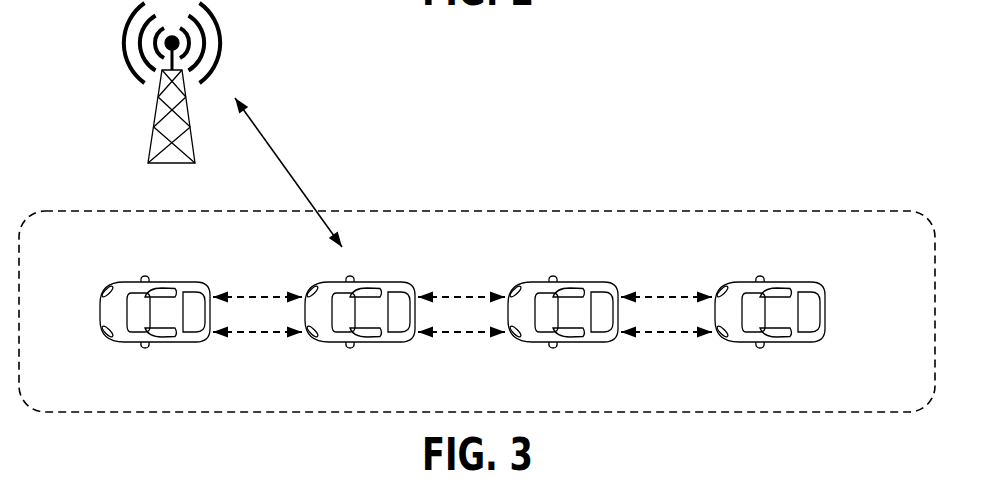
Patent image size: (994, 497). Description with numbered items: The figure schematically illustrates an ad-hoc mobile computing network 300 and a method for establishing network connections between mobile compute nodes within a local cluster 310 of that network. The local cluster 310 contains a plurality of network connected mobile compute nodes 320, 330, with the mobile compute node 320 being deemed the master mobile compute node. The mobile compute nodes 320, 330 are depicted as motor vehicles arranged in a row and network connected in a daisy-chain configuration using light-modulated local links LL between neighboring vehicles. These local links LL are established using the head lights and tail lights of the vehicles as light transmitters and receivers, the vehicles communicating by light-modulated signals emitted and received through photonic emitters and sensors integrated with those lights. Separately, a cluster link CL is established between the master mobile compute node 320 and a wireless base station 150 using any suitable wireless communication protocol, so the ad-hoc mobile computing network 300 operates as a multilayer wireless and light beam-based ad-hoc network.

The wireless base station 150 is at (157, 125).
The ad-hoc mobile computing network 300 is at (453, 117).
The local cluster 310 is at (438, 211).
The master mobile compute node 320 is at (330, 283).
The mobile compute node 330 is at (124, 283).